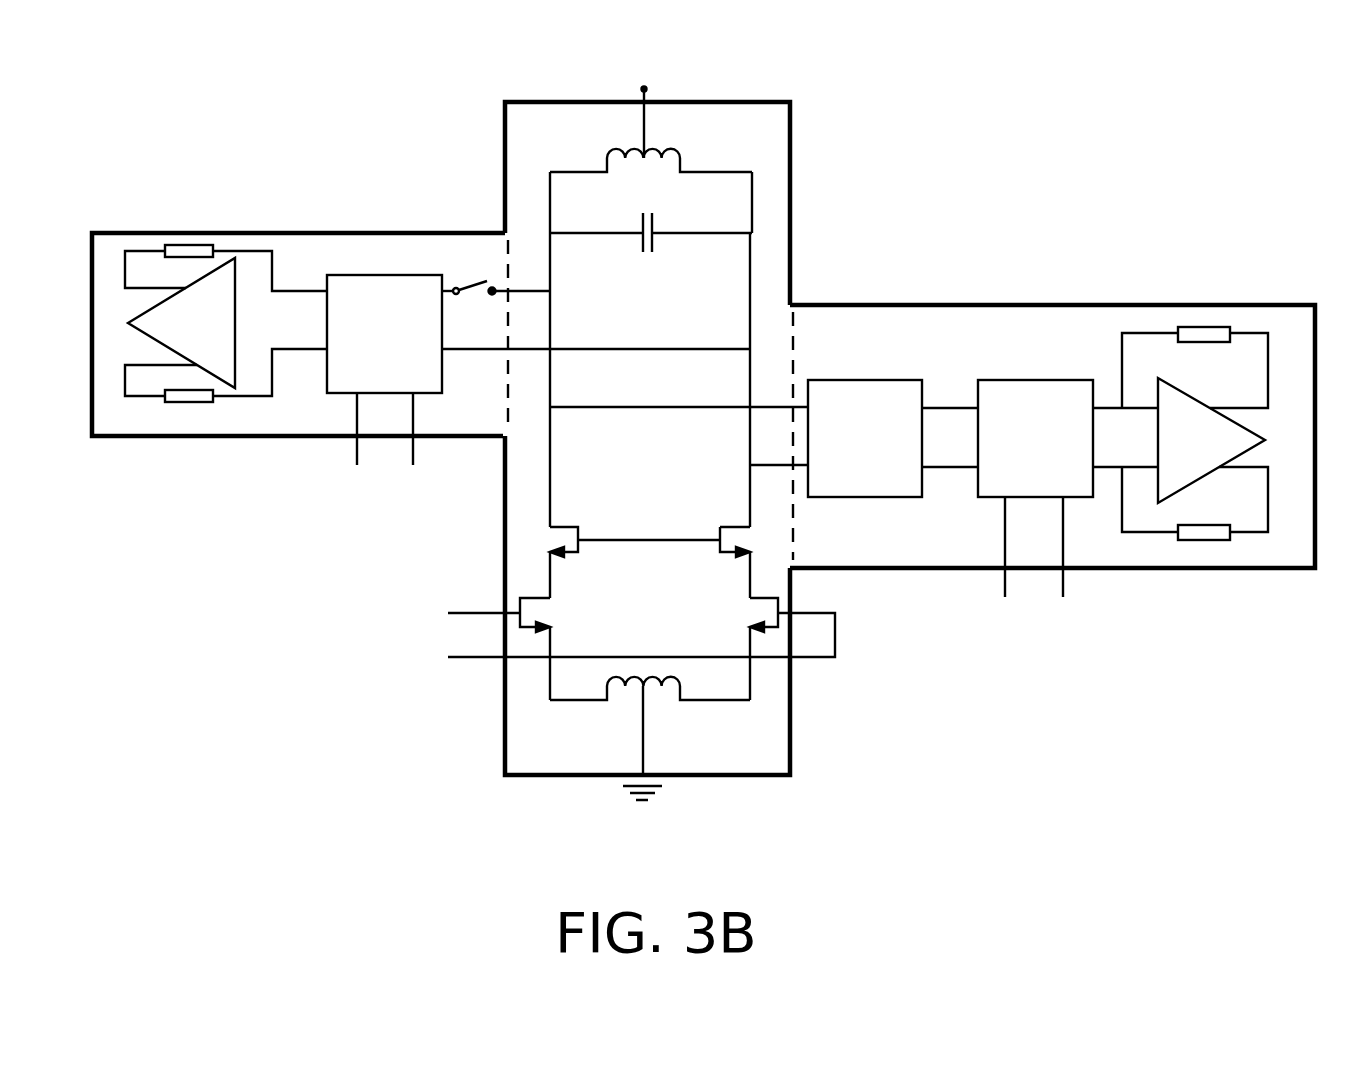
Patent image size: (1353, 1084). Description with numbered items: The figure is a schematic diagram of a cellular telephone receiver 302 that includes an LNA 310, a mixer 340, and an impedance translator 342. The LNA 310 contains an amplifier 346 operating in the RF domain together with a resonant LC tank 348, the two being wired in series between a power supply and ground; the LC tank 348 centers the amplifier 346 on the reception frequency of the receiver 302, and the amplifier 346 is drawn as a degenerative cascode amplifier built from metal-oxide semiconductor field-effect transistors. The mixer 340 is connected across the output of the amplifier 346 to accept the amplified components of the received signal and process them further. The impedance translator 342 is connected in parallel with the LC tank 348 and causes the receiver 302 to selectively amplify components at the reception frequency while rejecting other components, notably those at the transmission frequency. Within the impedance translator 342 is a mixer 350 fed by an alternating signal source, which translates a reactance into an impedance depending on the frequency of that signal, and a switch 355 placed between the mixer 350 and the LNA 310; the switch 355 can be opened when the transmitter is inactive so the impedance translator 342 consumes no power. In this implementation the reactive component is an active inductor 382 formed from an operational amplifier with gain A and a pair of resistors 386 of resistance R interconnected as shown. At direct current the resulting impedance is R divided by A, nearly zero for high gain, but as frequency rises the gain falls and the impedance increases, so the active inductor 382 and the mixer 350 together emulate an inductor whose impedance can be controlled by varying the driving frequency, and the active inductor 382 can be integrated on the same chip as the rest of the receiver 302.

The receiver 302 is at (1048, 165).
The LNA 310 is at (800, 140).
The mixer 340 is at (1096, 298).
The impedance translator 342 is at (215, 228).
The amplifier 346 is at (762, 723).
The LC tank 348 is at (775, 205).
The mixer 350 is at (327, 393).
The switch 355 is at (484, 268).
The active inductor 382 is at (233, 257).
The resistors 386 is at (190, 244).